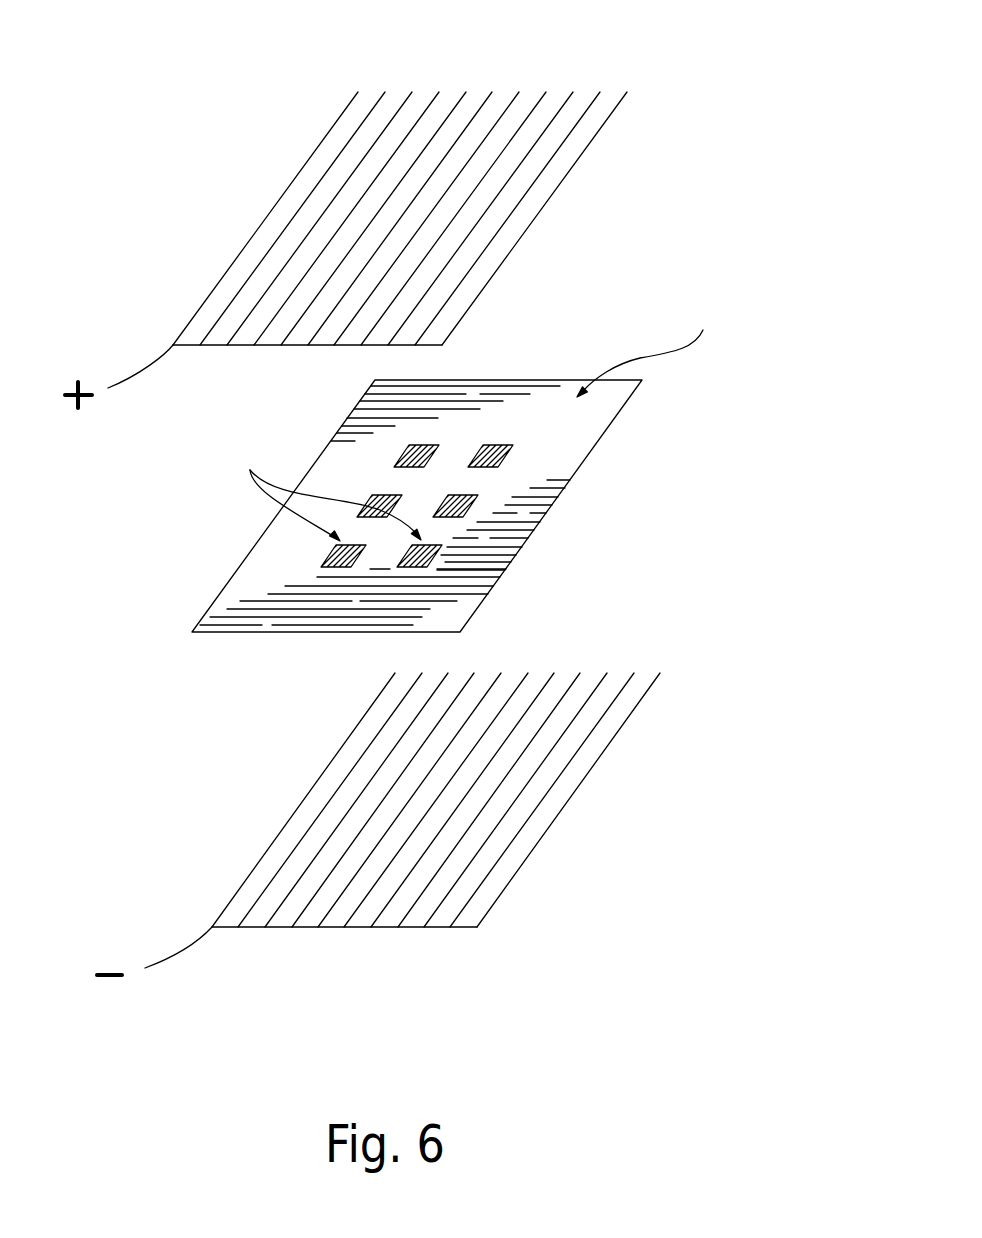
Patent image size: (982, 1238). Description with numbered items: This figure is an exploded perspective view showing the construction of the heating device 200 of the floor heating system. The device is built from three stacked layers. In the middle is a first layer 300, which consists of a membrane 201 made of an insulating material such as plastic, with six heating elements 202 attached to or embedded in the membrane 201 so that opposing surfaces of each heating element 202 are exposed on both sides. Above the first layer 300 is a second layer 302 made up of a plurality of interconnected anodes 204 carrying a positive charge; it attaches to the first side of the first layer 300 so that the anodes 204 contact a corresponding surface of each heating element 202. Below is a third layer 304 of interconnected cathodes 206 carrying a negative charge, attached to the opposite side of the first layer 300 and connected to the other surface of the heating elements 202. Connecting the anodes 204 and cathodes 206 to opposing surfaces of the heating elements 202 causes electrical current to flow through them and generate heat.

The heating device 200 is at (250, 118).
The membrane 201 is at (478, 558).
The heating elements 202 is at (336, 546).
The anodes 204 is at (282, 195).
The cathodes 206 is at (320, 773).
The first layer 300 is at (602, 503).
The second layer 302 is at (606, 184).
The third layer 304 is at (607, 794).